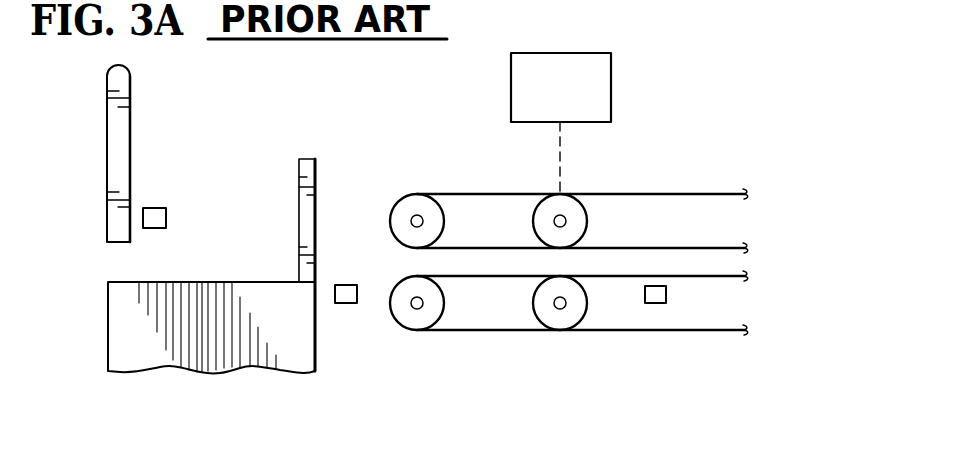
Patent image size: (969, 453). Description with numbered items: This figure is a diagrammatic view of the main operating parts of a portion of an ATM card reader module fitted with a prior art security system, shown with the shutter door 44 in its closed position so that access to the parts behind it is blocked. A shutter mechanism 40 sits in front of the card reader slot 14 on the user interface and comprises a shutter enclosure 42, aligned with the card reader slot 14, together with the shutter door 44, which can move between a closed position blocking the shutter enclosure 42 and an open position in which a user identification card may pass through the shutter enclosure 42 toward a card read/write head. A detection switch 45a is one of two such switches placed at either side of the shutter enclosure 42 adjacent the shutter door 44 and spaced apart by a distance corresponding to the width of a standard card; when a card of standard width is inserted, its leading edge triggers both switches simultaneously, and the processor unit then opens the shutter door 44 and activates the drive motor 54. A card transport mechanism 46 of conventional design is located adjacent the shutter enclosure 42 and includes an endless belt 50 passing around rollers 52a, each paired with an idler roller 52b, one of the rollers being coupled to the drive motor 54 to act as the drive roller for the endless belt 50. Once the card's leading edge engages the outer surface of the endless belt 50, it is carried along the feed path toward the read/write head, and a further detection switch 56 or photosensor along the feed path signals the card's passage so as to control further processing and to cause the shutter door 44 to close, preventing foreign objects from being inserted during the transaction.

The card reader slot 14 is at (117, 253).
The shutter mechanism 40 is at (116, 272).
The shutter enclosure 42 is at (118, 334).
The shutter door 44 is at (307, 159).
The detection switch 45a is at (163, 208).
The card transport mechanism 46 is at (697, 183).
The endless belt 50 is at (492, 193).
The roller 52a is at (403, 210).
The idler roller 52b is at (407, 319).
The drive motor 54 is at (611, 87).
The detection switch 56 is at (350, 287).